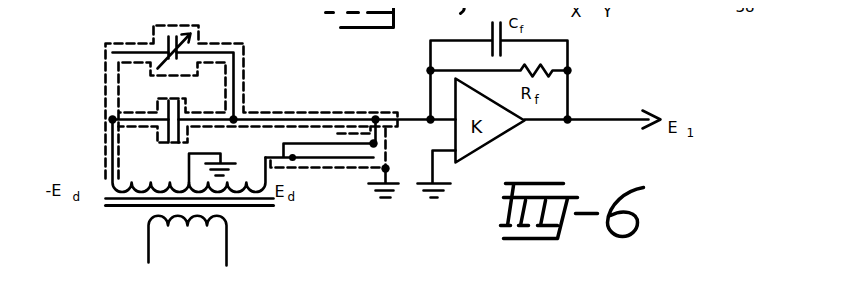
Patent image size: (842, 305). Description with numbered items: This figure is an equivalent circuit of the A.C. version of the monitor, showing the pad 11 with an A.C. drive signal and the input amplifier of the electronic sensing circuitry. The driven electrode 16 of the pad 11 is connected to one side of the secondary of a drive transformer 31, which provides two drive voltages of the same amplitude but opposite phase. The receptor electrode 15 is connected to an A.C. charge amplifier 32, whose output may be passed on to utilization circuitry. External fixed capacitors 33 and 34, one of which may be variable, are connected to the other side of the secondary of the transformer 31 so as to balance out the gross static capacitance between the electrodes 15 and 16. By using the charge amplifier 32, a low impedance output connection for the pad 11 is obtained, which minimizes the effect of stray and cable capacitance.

The pad 11 is at (313, 167).
The receptor electrode 15 is at (330, 143).
The driven electrode 16 is at (332, 158).
The drive transformer 31 is at (252, 212).
The A.C. charge amplifier 32 is at (495, 132).
The external fixed capacitor 33 is at (176, 100).
The external fixed capacitor 34 is at (170, 32).